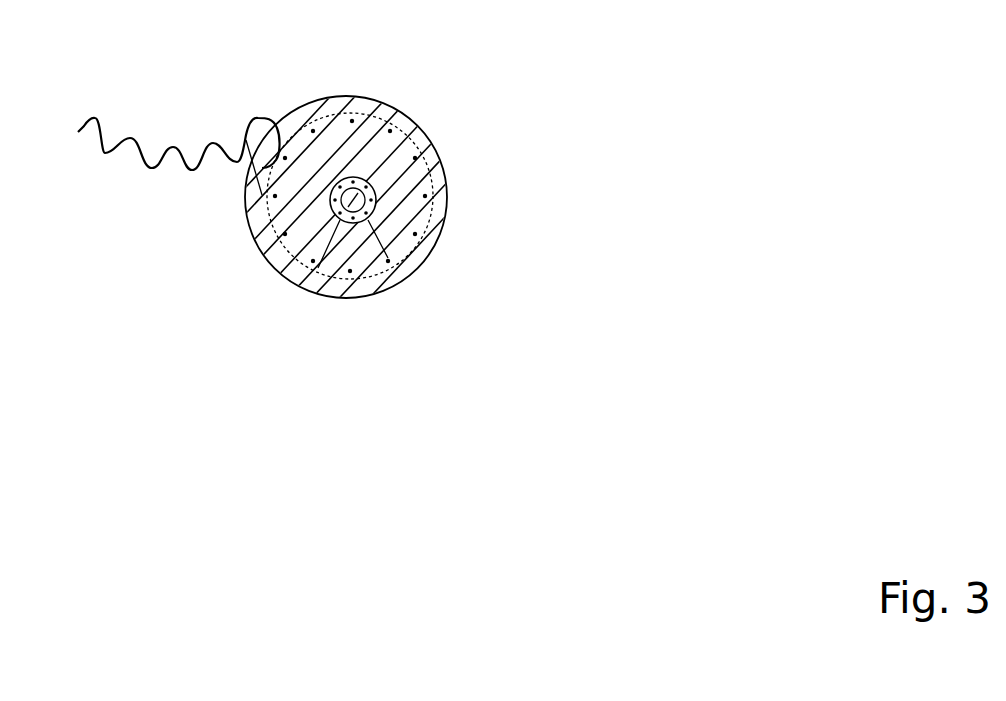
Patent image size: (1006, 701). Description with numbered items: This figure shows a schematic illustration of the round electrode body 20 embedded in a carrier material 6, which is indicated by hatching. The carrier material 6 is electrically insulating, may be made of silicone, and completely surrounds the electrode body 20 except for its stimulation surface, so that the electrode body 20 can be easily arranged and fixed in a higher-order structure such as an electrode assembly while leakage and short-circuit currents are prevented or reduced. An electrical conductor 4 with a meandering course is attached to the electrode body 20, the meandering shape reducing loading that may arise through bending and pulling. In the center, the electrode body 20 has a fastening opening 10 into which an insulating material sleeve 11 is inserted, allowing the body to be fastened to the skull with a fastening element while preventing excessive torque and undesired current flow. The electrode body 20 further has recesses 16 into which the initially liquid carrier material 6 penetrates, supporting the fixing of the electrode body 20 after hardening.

The electrical conductor 4 is at (173, 141).
The carrier material 6 is at (258, 198).
The fastening opening 10 is at (327, 293).
The insulating material sleeve 11 is at (407, 270).
The recesses 16 is at (418, 122).
The electrode body 20 is at (398, 197).